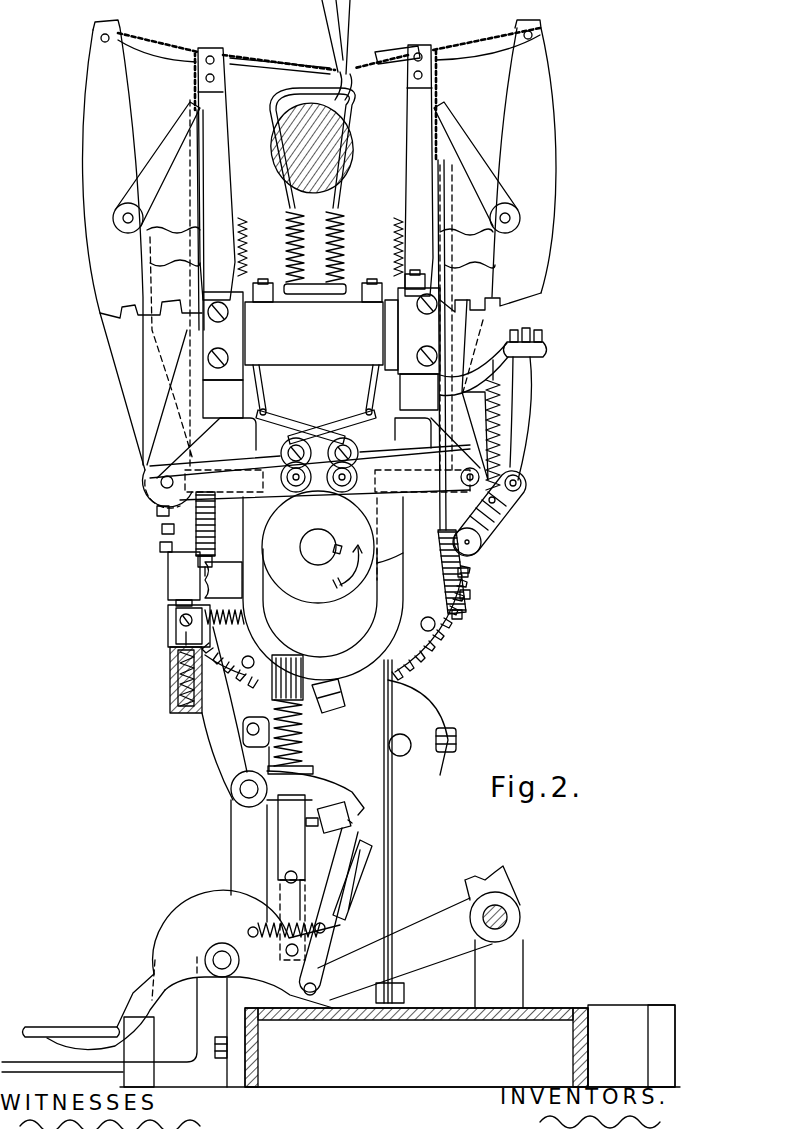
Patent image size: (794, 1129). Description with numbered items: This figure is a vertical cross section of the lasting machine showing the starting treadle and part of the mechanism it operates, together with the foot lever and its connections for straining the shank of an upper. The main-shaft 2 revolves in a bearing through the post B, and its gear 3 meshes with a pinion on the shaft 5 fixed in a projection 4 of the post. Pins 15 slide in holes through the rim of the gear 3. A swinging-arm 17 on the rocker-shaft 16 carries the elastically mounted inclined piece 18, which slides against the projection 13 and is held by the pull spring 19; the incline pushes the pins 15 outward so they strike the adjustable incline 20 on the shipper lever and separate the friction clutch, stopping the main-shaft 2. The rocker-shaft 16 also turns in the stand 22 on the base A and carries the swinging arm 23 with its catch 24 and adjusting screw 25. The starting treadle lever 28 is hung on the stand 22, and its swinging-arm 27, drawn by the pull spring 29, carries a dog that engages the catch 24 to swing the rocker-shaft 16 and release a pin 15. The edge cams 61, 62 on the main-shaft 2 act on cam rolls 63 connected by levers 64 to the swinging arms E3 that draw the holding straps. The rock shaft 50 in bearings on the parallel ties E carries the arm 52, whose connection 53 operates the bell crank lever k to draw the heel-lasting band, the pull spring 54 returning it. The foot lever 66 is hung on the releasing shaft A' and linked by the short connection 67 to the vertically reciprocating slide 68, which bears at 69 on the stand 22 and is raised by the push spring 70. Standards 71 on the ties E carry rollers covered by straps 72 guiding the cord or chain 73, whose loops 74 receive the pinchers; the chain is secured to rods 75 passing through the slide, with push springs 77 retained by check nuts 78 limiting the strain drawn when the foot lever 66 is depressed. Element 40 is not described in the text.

The main-shaft 2 is at (331, 558).
The gear 3 is at (156, 526).
The projection 4 is at (442, 732).
The shaft 5 is at (396, 738).
The projection 13 is at (223, 580).
The pins 15 is at (247, 668).
The rocker-shaft 16 is at (231, 790).
The swinging-arm 17 is at (212, 750).
The inclined piece 18 is at (168, 580).
The pull spring 19 is at (205, 628).
The adjustable incline 20 is at (328, 911).
The stand 22 is at (249, 861).
The swinging arm 23 is at (303, 766).
The catch 24 is at (350, 813).
The adjusting screw 25 is at (352, 823).
The swinging-arm 27 is at (350, 890).
The starting treadle lever 28 is at (178, 996).
The pull spring 29 is at (258, 924).
The pawl 40 is at (342, 692).
The rock shaft 50 is at (482, 545).
The arm 52 is at (512, 508).
The connection 53 is at (532, 413).
The pull spring 54 is at (500, 450).
The edge cam 61 is at (300, 492).
The edge cam 62 is at (375, 497).
The cam rolls 63 is at (318, 432).
The levers 64 is at (312, 463).
The foot lever 66 is at (262, 976).
The short connection 67 is at (310, 900).
The vertically reciprocating slide 68 is at (304, 725).
The bearing 69 is at (299, 761).
The push spring 70 is at (300, 726).
The standards 71 is at (315, 172).
The straps 72 is at (217, 86).
The cord or chain 73 is at (329, 94).
The loops 74 is at (335, 66).
The rods 75 is at (195, 190).
The push springs 77 is at (228, 515).
The check nuts 78 is at (198, 560).
The base A is at (400, 1046).
The releasing shaft A' is at (529, 917).
The post B is at (378, 831).
The parallel ties E is at (355, 253).
The swinging arms E3 is at (320, 263).
The bell crank lever k is at (532, 342).